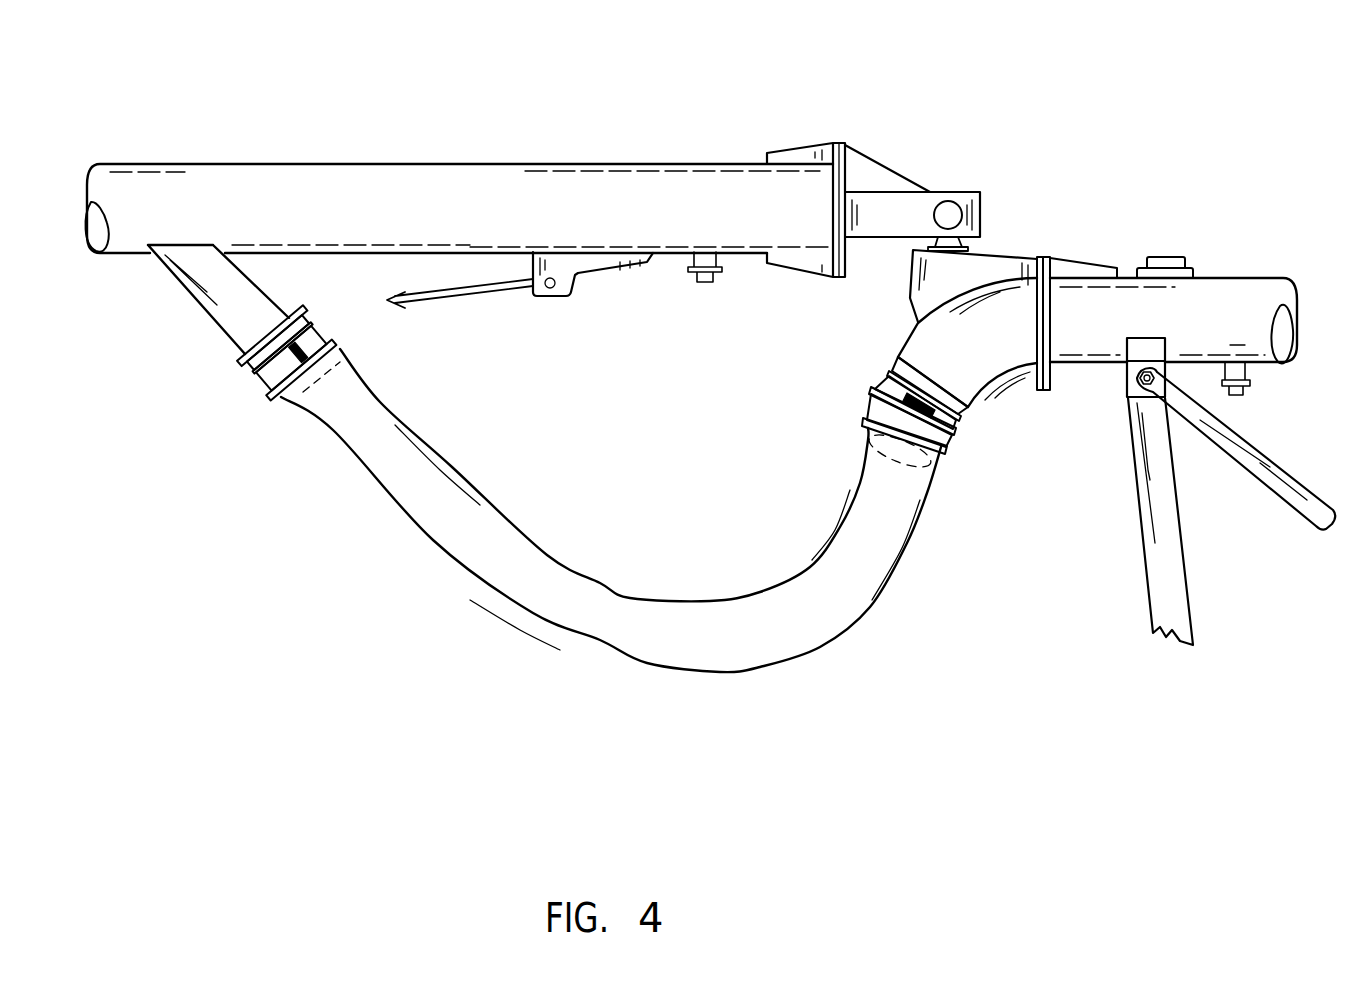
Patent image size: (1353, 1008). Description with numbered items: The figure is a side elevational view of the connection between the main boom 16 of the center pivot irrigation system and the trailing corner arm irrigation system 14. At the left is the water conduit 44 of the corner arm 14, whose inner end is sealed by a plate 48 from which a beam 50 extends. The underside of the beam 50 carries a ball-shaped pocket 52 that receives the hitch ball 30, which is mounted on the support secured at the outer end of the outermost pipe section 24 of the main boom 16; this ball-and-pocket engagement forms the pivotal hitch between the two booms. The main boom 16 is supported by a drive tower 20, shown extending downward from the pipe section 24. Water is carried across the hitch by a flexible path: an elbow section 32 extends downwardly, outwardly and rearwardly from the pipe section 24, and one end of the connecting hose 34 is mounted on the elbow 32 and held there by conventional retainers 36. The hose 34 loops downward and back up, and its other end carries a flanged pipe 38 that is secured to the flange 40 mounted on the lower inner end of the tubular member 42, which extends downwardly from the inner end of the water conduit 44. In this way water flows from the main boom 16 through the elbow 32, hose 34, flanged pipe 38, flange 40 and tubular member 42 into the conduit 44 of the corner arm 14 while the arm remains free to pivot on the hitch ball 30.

The corner arm irrigation system 14 is at (590, 150).
The main boom 16 is at (1207, 243).
The drive tower 20 is at (1180, 575).
The outermost pipe section 24 is at (1225, 305).
The hitch ball 30 is at (925, 247).
The elbow section 32 is at (858, 434).
The connecting hose 34 is at (550, 577).
The retainers 36 is at (878, 398).
The flanged pipe 38 is at (310, 313).
The flange 40 is at (240, 352).
The tubular member 42 is at (253, 292).
The water conduit 44 is at (703, 185).
The plate 48 is at (845, 148).
The beam 50 is at (925, 205).
The ball-shaped pocket 52 is at (985, 207).